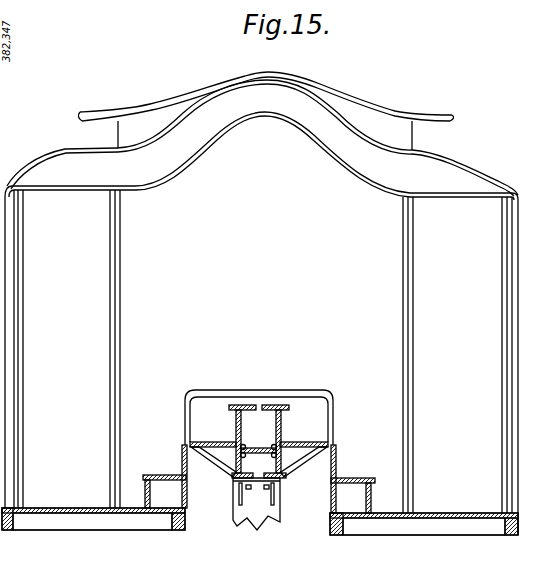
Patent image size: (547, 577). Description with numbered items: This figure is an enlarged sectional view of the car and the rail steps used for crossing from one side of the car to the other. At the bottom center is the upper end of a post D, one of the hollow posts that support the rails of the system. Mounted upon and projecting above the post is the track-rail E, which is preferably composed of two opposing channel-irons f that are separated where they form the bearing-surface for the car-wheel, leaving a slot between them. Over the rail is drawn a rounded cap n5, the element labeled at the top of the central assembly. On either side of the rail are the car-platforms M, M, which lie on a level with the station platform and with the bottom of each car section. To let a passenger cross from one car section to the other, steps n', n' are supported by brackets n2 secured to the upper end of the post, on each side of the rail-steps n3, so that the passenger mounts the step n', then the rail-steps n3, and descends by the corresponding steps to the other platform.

The car-platform M is at (84, 507).
The step n' is at (259, 468).
The rounded housing cap n5 is at (258, 396).
The rail-step n3 is at (289, 407).
The channel-iron f is at (235, 428).
The track-rail E is at (259, 450).
The bracket n2 is at (304, 469).
The post D is at (256, 504).